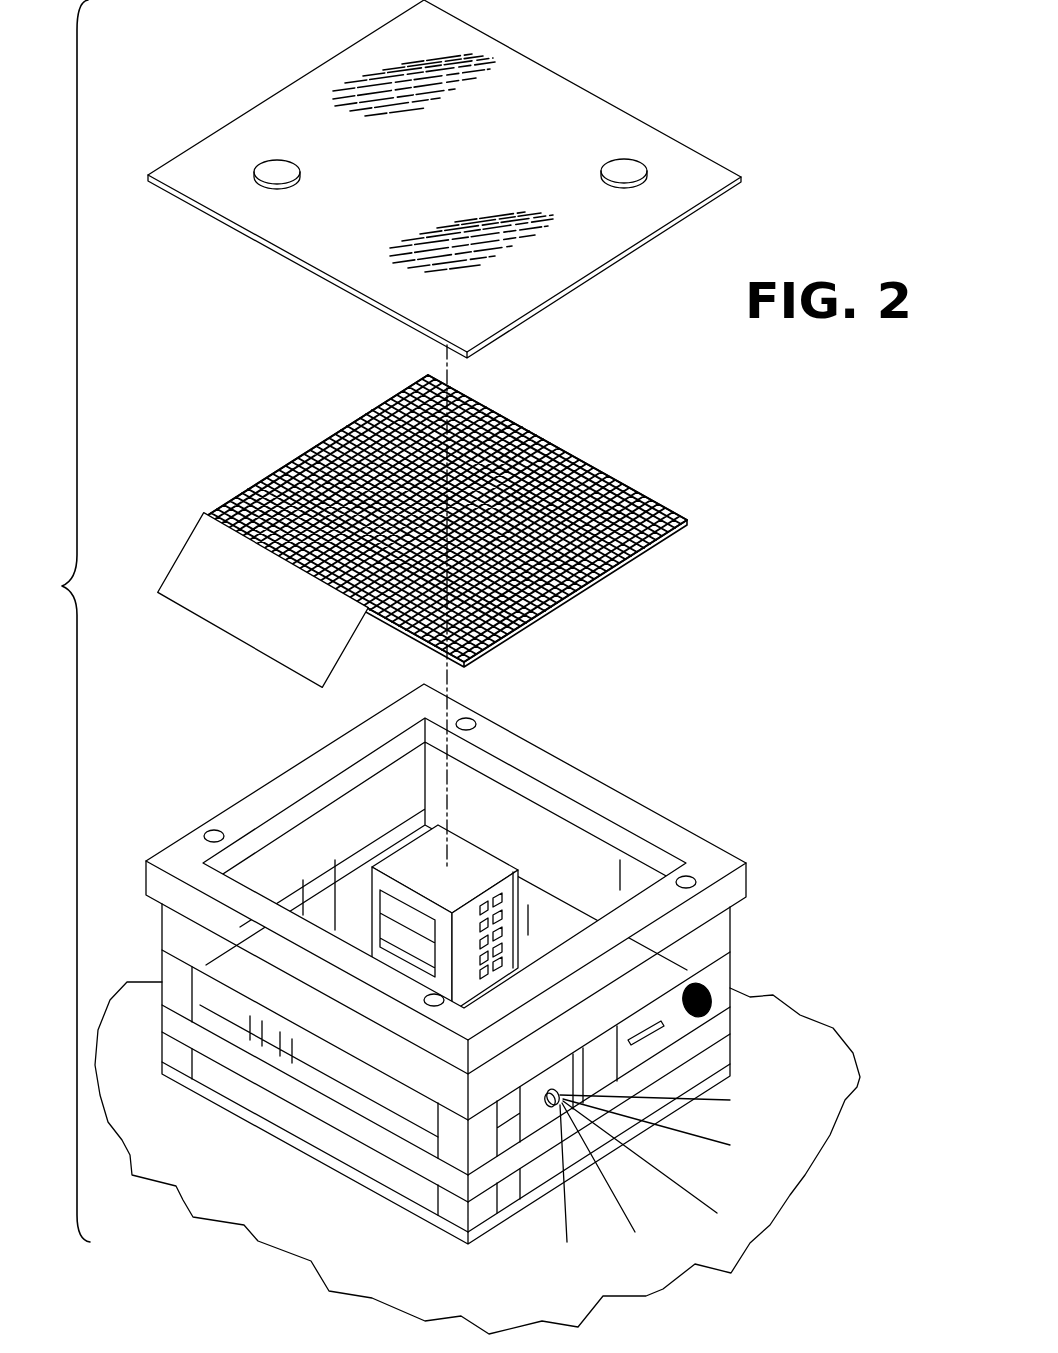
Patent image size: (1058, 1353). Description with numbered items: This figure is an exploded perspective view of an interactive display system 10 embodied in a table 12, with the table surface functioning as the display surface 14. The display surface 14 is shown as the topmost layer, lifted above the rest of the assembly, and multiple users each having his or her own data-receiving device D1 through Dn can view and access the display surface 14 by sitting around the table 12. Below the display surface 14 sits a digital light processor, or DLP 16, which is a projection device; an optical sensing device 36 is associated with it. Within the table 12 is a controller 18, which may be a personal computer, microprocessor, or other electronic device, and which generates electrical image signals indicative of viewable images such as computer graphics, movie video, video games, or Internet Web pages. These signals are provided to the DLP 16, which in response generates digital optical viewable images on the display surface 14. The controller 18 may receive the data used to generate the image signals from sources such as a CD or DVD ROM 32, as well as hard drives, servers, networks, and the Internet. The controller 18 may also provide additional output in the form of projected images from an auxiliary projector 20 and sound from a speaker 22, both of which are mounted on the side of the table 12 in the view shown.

The interactive display system 10 is at (55, 621).
The table 12 is at (484, 982).
The display surface 14 is at (612, 87).
The digital light processor (DLP) 16 is at (560, 442).
The controller 18 is at (475, 835).
The auxiliary projector 20 is at (535, 1138).
The speaker 22 is at (712, 987).
The CD or DVD ROM 32 is at (655, 1038).
The optical sensing device 36 is at (238, 640).
The data-receiving device D1 is at (275, 165).
The data-receiving device Dn is at (635, 163).